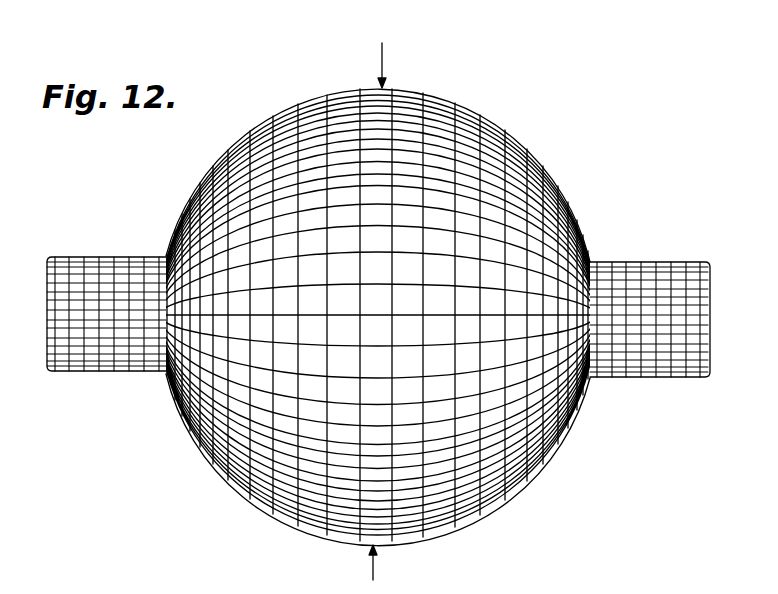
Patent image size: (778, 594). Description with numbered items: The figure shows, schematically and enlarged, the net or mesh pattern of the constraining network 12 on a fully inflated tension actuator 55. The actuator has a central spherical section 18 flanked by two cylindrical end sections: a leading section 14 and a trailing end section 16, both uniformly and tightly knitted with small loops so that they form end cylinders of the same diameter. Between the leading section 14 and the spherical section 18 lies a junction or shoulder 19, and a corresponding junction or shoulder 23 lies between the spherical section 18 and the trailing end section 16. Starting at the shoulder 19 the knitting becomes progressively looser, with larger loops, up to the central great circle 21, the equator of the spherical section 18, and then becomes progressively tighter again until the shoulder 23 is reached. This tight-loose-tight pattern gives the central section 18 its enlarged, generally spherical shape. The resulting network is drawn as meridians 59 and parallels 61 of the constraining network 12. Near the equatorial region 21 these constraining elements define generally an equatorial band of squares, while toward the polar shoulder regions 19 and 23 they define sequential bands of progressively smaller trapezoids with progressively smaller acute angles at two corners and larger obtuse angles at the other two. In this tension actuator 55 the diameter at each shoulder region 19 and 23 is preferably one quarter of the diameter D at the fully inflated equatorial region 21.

The mesh 12 is at (473, 140).
The leading section 14 is at (104, 234).
The trailing end section 16 is at (676, 234).
The spherical section 18 is at (541, 131).
The shoulder 19 is at (165, 253).
The central great circle 21 is at (390, 82).
The shoulder 23 is at (597, 261).
The tension actuator 55 is at (379, 296).
The meridians 59 is at (345, 150).
The parallels 61 is at (298, 138).